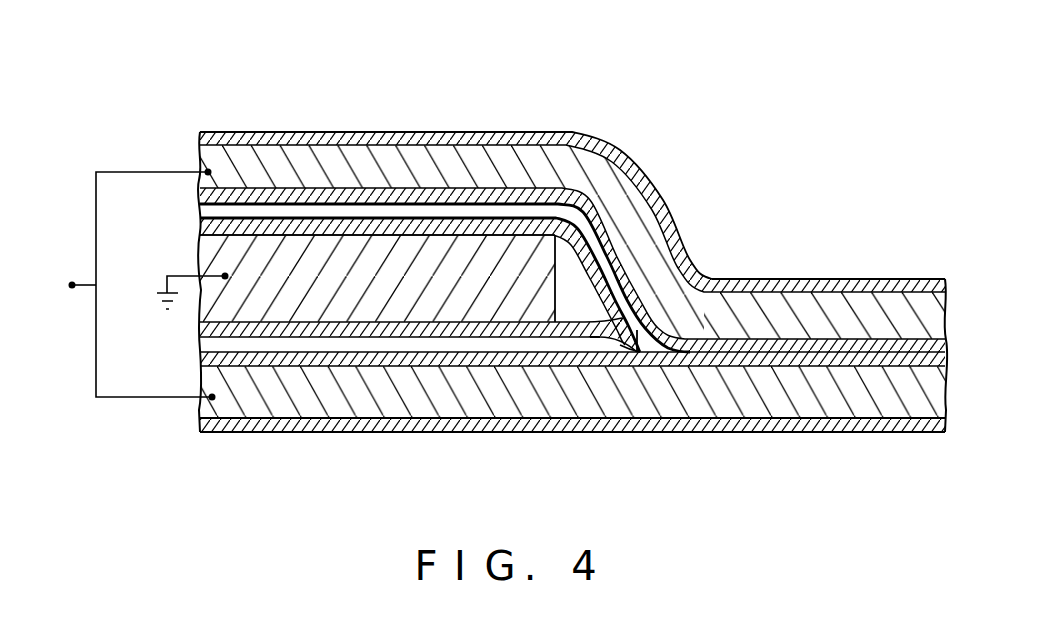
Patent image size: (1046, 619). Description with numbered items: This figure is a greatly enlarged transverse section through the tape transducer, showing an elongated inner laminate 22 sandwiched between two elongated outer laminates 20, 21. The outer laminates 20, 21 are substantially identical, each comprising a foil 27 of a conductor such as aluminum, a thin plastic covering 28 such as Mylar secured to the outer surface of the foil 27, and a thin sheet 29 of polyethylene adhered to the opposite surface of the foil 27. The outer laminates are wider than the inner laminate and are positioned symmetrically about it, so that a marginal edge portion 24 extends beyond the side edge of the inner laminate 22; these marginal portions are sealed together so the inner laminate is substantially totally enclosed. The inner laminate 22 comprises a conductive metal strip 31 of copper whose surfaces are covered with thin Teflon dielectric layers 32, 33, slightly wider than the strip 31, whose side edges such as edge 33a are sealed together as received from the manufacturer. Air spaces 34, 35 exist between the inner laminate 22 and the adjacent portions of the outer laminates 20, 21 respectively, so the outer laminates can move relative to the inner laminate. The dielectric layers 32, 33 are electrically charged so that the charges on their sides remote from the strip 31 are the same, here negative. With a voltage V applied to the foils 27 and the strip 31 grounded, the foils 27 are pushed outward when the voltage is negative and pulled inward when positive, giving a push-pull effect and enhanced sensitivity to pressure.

The outer laminate 20 is at (188, 118).
The outer laminate 21 is at (192, 430).
The inner laminate 22 is at (377, 278).
The marginal edge portion 24 is at (860, 277).
The foil 27 is at (336, 158).
The plastic covering 28 is at (260, 132).
The sheet 29 is at (443, 192).
The conductive metal strip 31 is at (200, 262).
The dielectric layer 32 is at (347, 332).
The dielectric layer 33 is at (200, 330).
The side edge 33a is at (628, 352).
The air space 34 is at (200, 212).
The air space 35 is at (200, 346).